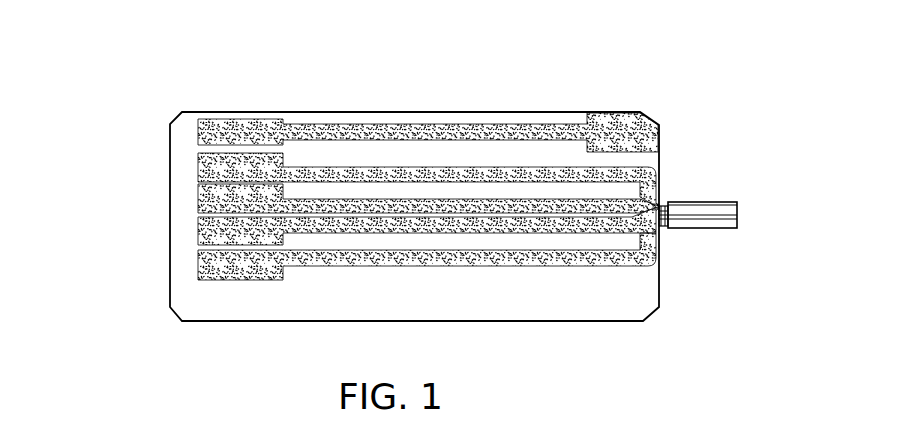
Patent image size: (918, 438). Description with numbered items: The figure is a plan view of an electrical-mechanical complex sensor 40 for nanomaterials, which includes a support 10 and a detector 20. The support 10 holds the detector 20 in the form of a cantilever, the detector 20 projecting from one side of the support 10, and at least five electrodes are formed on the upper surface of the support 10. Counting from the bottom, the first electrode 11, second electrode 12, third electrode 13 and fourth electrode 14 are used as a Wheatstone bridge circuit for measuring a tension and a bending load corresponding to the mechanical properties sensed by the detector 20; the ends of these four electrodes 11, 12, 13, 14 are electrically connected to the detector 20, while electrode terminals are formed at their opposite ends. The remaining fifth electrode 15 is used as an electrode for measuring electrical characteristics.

The support 10 is at (438, 110).
The first electrode 11 is at (201, 264).
The second electrode 12 is at (201, 228).
The third electrode 13 is at (201, 199).
The fourth electrode 14 is at (201, 167).
The fifth electrode 15 is at (201, 131).
The detector 20 is at (713, 203).
The complex sensor 40 is at (678, 115).